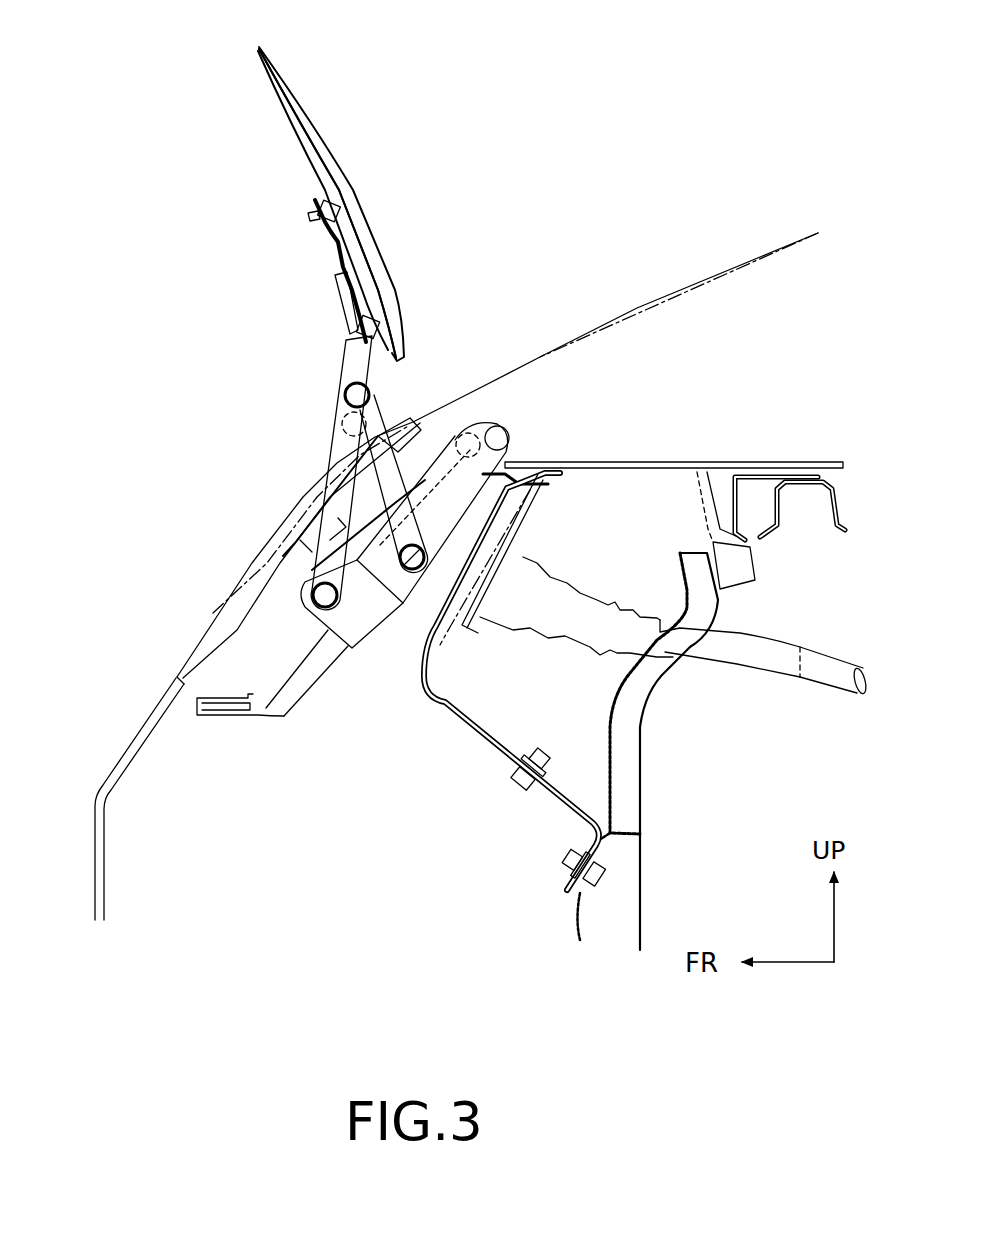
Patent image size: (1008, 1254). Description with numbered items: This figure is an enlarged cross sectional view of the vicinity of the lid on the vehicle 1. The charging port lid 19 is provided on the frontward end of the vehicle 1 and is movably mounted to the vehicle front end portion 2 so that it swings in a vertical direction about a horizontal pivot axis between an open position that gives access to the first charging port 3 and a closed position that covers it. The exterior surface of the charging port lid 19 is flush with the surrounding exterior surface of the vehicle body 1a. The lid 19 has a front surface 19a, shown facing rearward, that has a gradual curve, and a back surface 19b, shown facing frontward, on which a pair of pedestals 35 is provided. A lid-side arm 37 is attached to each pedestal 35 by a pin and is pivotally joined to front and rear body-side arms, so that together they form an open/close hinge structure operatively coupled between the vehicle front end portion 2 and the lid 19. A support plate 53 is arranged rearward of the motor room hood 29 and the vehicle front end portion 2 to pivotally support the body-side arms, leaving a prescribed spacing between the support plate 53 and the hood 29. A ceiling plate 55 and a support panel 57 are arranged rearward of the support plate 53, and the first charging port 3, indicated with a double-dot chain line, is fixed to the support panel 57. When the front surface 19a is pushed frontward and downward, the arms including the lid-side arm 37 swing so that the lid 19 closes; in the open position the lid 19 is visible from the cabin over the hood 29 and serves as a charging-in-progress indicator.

The vehicle 1 is at (665, 160).
The vehicle body 1a is at (800, 228).
The vehicle front end portion 2 is at (124, 744).
The first charging port 3 is at (408, 615).
The charging port lid 19 is at (306, 100).
The front surface 19a is at (332, 144).
The back surface 19b is at (310, 164).
The motor room hood 29 is at (627, 308).
The pedestal 35 is at (336, 207).
The lid-side arm 37 is at (353, 368).
The support plate 53 is at (262, 716).
The ceiling plate 55 is at (635, 462).
The support panel 57 is at (470, 738).